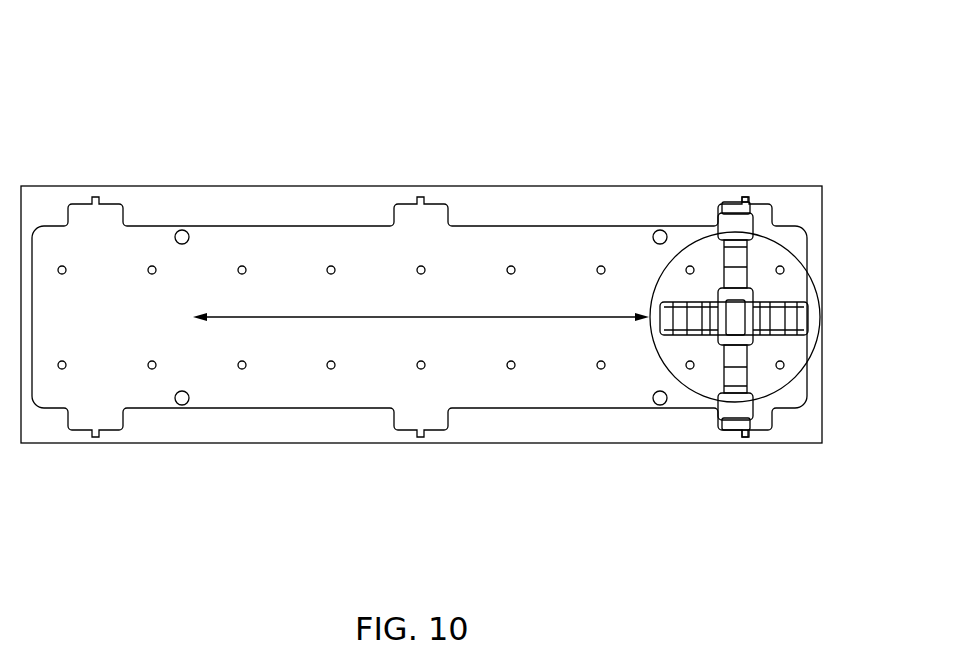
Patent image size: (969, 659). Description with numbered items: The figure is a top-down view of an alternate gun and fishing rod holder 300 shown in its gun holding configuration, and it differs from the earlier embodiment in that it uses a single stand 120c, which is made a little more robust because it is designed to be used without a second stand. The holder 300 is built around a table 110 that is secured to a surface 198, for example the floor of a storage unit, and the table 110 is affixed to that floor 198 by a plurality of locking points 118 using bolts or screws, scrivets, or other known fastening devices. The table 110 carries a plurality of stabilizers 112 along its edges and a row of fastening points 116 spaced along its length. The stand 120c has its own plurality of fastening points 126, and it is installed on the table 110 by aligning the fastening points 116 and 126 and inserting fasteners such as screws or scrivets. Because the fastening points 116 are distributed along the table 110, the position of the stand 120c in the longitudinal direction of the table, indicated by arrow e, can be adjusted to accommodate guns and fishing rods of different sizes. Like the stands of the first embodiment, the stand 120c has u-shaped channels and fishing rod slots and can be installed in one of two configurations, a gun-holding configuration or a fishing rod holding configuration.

The gun and fishing rod holder 300 is at (200, 80).
The surface 198 is at (790, 443).
The table 110 is at (478, 285).
The stabilizers 112 is at (420, 437).
The fastening points 116 is at (333, 266).
The locking points 118 is at (184, 231).
The stand 120c is at (822, 173).
The fastening points 126 is at (783, 272).
The arrow e is at (453, 318).